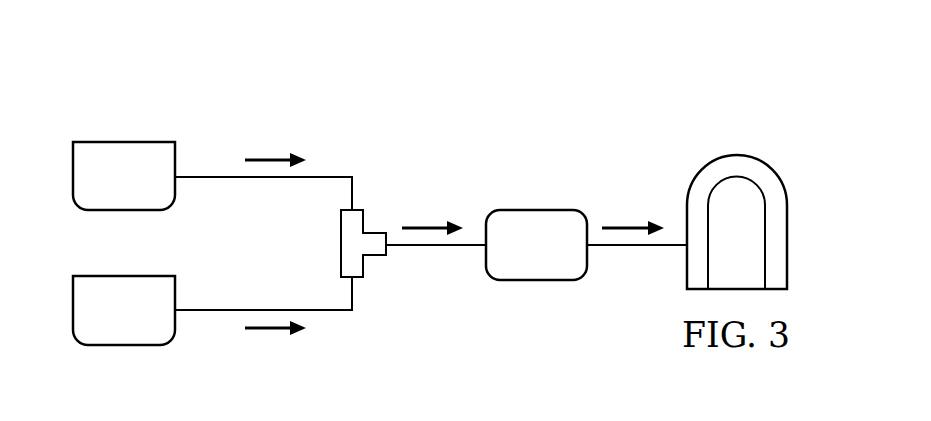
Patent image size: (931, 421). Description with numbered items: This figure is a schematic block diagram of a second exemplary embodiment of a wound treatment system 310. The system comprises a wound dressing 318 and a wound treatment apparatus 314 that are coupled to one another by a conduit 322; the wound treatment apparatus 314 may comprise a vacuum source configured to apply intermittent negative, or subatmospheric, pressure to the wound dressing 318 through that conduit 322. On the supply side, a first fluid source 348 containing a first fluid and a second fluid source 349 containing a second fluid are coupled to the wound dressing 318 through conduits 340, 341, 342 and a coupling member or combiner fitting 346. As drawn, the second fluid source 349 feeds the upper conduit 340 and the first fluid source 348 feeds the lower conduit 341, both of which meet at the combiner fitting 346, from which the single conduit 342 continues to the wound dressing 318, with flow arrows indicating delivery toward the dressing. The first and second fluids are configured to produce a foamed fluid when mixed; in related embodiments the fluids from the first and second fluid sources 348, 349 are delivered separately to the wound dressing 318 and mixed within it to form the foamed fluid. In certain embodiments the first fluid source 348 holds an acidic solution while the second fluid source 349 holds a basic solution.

The wound treatment system 310 is at (82, 54).
The wound treatment apparatus 314 is at (789, 233).
The wound dressing 318 is at (537, 282).
The conduit 322 is at (636, 247).
The conduit 340 is at (219, 176).
The conduit 341 is at (210, 312).
The conduit 342 is at (432, 247).
The combiner fitting 346 is at (340, 233).
The first fluid source 348 is at (121, 347).
The second fluid source 349 is at (121, 141).